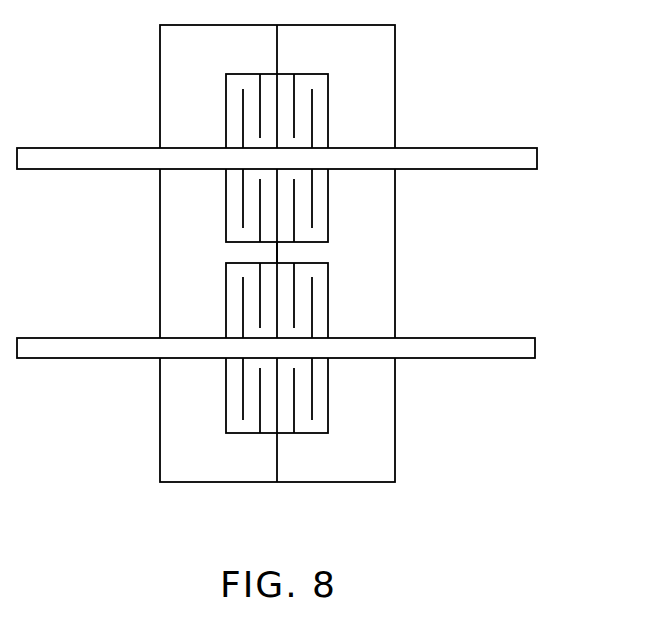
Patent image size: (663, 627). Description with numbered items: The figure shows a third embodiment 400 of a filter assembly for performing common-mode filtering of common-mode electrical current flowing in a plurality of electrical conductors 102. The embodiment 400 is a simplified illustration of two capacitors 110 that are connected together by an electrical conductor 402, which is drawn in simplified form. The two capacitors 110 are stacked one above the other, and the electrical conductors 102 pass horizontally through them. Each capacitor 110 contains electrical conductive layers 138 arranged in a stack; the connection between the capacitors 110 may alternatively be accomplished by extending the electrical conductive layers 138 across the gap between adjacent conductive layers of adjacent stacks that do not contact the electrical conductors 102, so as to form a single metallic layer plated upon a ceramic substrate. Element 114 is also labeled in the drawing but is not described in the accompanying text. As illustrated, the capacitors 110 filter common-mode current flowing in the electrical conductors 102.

The electrical conductors 102 is at (537, 347).
The capacitors 110 is at (281, 264).
The substrate 114 is at (357, 483).
The electrical conductive layers 138 is at (226, 211).
The filter assembly embodiment 400 is at (301, 303).
The electrical conductor 402 is at (278, 252).